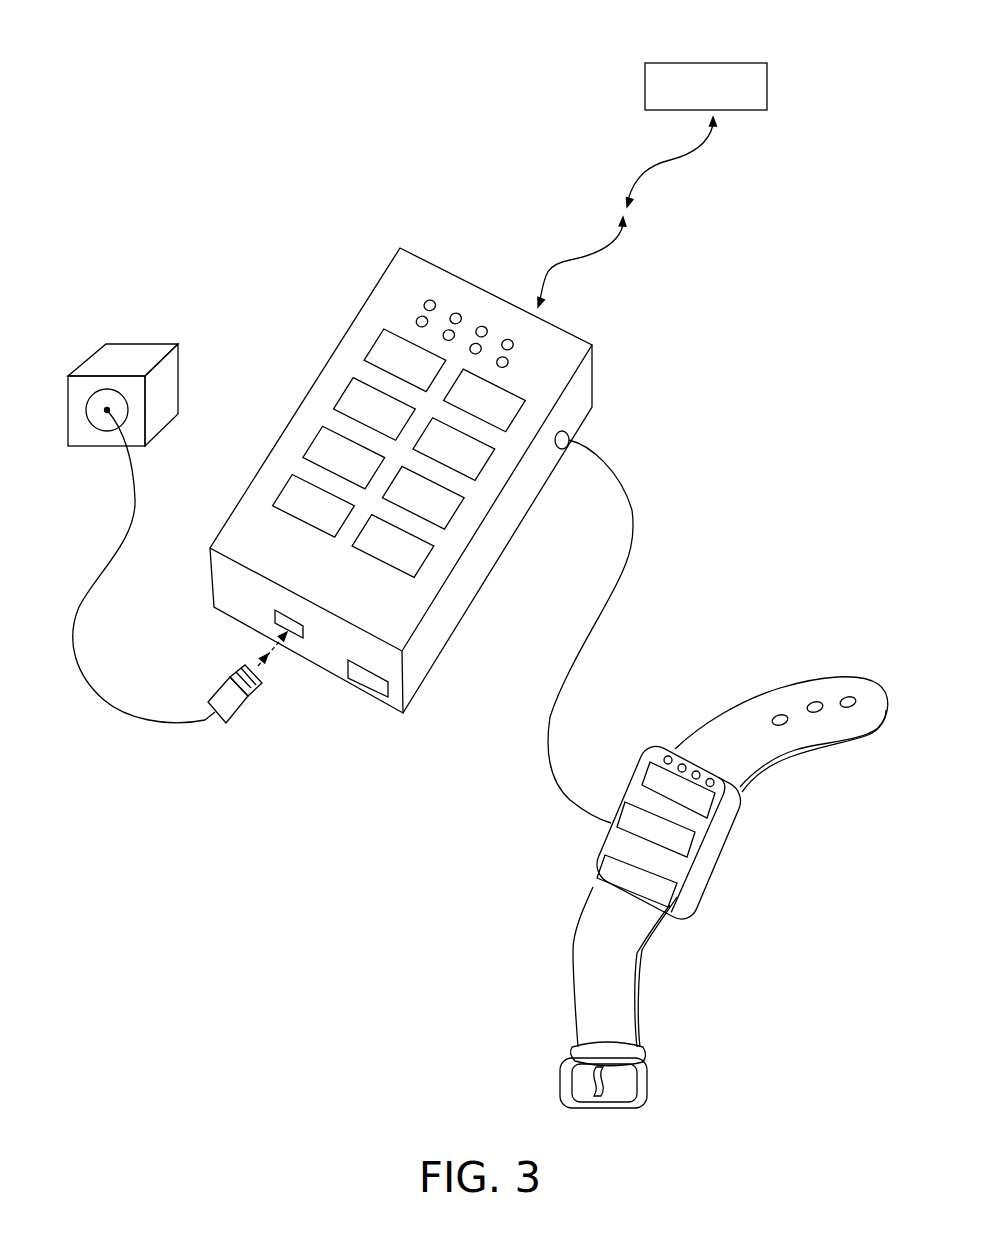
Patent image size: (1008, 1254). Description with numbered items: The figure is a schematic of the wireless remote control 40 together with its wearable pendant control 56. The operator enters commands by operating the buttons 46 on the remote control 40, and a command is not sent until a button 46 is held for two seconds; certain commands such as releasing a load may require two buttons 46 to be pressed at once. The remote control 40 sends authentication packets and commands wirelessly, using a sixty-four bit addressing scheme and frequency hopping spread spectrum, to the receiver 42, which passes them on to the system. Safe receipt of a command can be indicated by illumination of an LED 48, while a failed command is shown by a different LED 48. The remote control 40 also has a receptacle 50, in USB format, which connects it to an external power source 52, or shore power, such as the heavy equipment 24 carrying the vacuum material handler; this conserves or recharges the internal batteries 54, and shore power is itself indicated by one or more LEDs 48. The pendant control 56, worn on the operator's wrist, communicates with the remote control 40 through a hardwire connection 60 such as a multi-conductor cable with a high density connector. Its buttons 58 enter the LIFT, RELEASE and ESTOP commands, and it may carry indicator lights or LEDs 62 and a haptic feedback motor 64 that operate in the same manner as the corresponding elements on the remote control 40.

The heavy equipment 24 is at (120, 355).
The external power source 52 is at (105, 430).
The wireless remote control 40 is at (487, 580).
The receiver 42 is at (767, 63).
The buttons 46 is at (384, 330).
The LED 48 is at (433, 300).
The receptacle 50 is at (300, 638).
The internal batteries 54 is at (377, 688).
The pendant control 56 is at (742, 849).
The buttons 58 is at (650, 770).
The hardwire connection 60 is at (621, 577).
The indicator lights/LEDs 62 is at (668, 756).
The haptic feedback motor 64 is at (703, 870).